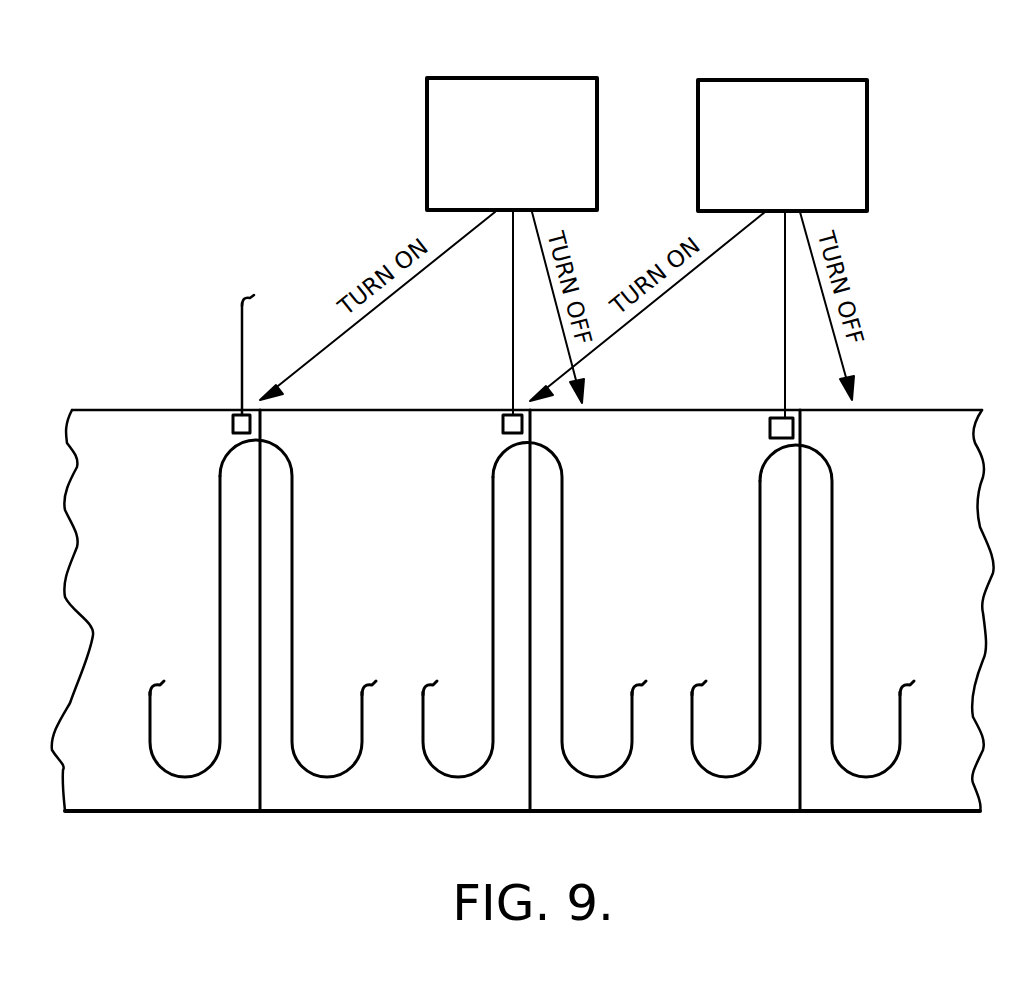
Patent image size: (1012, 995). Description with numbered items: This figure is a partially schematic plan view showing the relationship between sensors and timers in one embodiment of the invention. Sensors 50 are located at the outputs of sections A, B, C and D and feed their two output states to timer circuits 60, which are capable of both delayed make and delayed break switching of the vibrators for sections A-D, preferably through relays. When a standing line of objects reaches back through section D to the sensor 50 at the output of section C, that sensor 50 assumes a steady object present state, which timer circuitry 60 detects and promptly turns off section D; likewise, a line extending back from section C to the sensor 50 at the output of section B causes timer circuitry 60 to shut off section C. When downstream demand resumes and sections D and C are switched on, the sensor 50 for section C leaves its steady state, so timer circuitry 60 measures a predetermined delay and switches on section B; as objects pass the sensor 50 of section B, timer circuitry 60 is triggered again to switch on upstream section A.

The timer circuit 60 is at (507, 78).
The sensor 50 is at (233, 420).
The section A is at (136, 610).
The section B is at (356, 610).
The section C is at (626, 610).
The section D is at (877, 610).